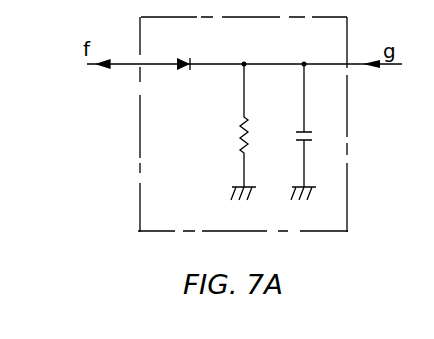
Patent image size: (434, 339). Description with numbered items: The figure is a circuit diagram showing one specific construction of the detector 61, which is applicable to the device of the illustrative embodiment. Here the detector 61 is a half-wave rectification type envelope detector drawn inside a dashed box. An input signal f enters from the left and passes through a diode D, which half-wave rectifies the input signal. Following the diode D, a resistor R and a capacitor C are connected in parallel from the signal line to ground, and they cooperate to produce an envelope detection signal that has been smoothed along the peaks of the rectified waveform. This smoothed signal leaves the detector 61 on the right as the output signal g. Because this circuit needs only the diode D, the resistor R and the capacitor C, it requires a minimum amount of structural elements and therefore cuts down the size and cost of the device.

The detector 61 is at (184, 124).
The diode D is at (184, 77).
The resistor R is at (237, 132).
The capacitor C is at (307, 132).